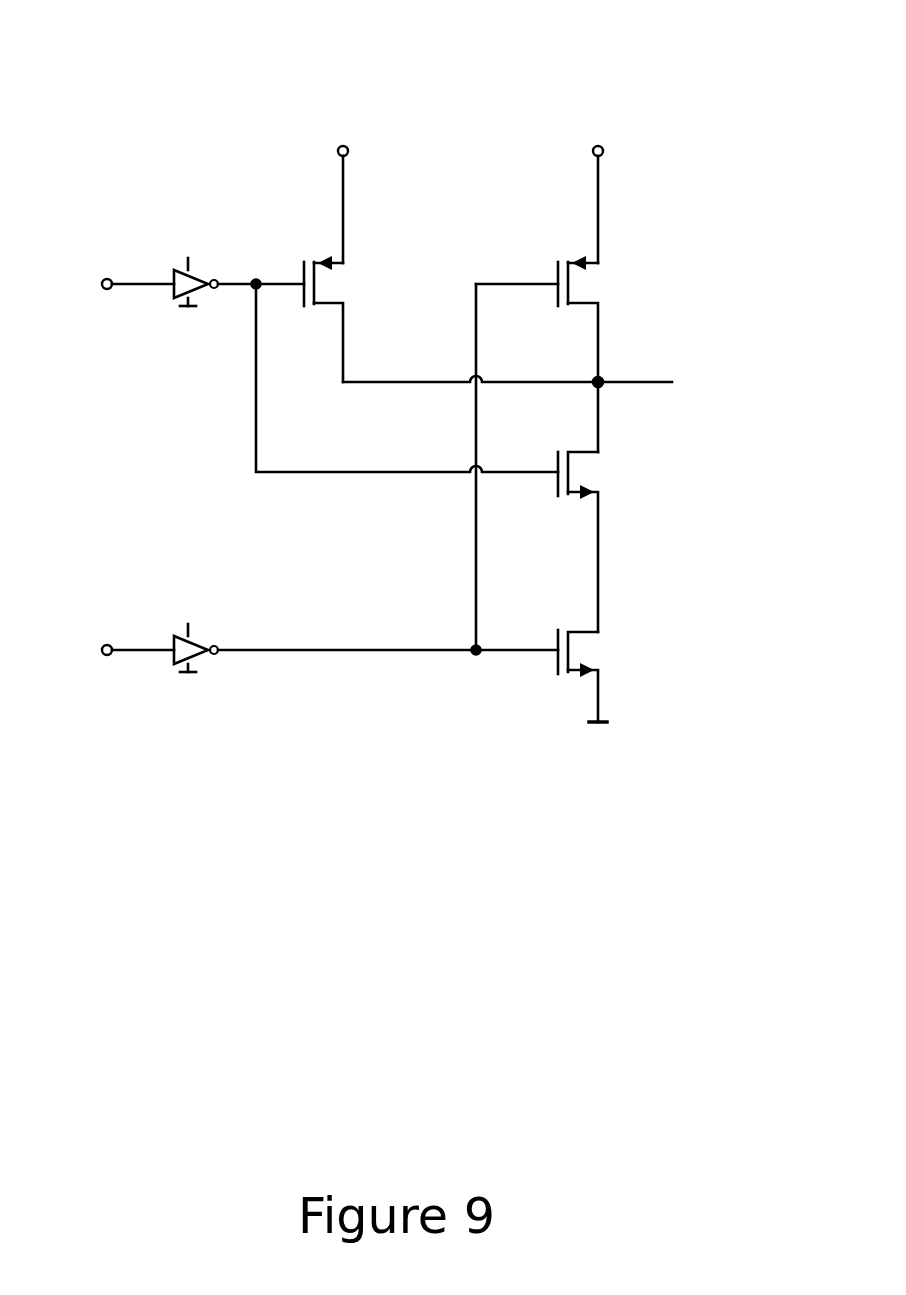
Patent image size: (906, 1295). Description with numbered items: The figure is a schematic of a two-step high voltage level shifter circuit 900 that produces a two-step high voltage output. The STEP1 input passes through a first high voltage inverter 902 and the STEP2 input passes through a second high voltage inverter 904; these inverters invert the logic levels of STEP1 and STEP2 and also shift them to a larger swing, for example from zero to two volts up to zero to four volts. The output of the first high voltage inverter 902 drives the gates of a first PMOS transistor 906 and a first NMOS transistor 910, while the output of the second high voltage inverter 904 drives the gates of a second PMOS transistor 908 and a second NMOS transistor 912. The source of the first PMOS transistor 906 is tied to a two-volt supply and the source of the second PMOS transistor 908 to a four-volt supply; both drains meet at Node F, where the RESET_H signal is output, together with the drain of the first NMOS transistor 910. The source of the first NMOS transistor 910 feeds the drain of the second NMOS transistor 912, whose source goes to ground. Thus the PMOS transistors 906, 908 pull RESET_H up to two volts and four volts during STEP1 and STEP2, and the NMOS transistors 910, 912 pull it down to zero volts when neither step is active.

The two-step high voltage level shifter circuit 900 is at (122, 45).
The first high voltage inverter 902 is at (180, 290).
The second high voltage inverter 904 is at (180, 656).
The first PMOS transistor 906 is at (302, 270).
The second PMOS transistor 908 is at (556, 270).
The first NMOS transistor 910 is at (556, 486).
The second NMOS transistor 912 is at (556, 664).